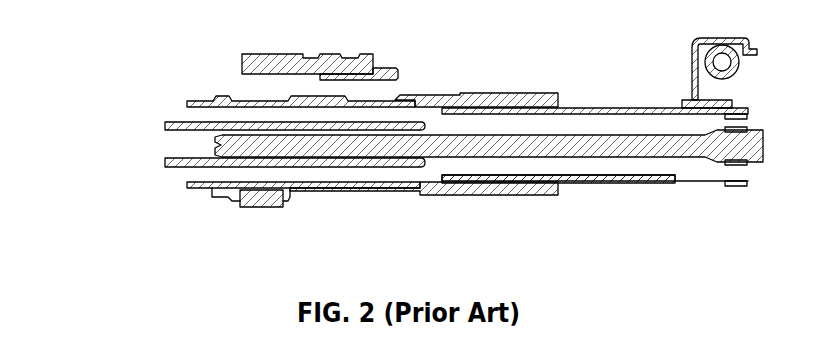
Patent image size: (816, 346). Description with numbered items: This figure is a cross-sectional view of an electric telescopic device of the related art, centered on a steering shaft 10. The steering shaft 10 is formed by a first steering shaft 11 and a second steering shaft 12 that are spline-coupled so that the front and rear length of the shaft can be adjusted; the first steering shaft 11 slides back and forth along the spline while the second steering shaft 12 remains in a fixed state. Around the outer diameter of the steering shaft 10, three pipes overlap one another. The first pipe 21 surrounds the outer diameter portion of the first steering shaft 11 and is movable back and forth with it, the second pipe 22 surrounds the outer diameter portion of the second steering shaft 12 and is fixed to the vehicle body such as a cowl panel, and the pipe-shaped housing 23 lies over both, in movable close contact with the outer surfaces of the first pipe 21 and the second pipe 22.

The steering shaft 10 is at (97, 133).
The first steering shaft 11 is at (187, 124).
The second steering shaft 12 is at (215, 143).
The first pipe 21 is at (224, 182).
The second pipe 22 is at (573, 108).
The housing 23 is at (427, 93).